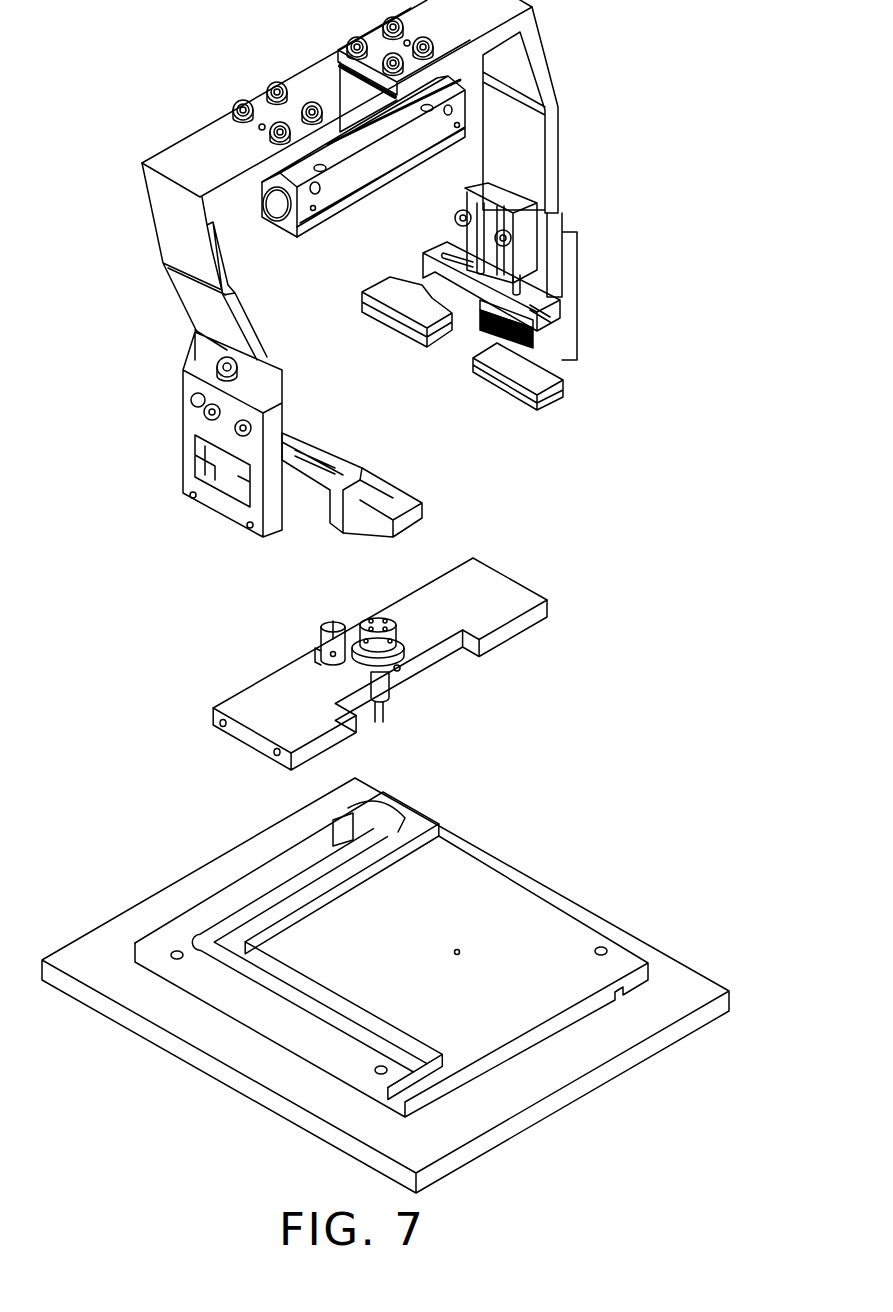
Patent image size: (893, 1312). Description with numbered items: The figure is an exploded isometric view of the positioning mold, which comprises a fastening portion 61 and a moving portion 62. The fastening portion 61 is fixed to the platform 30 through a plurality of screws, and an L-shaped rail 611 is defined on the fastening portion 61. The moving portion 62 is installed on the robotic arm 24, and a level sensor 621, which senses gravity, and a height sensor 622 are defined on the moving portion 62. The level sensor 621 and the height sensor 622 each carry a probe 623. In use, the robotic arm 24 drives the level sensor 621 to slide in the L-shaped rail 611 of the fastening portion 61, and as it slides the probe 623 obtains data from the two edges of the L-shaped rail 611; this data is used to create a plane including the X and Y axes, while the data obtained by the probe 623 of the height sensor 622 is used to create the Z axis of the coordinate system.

The robotic arm 24 is at (538, 163).
The platform 30 is at (667, 982).
The fastening portion 61 is at (366, 954).
The L-shaped rail 611 is at (192, 940).
The moving portion 62 is at (487, 583).
The level sensor 621 is at (377, 621).
The height sensor 622 is at (333, 622).
The probe 623 is at (387, 710).